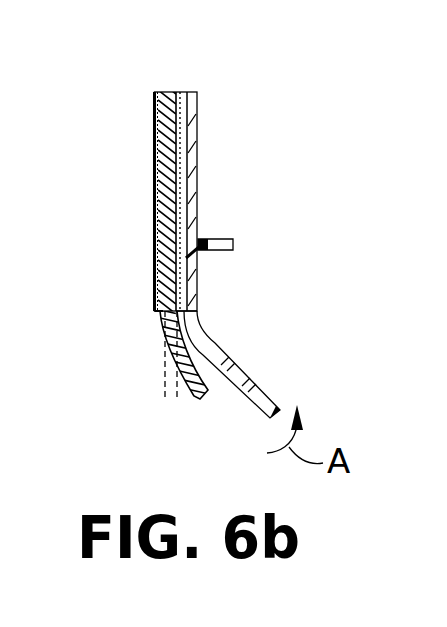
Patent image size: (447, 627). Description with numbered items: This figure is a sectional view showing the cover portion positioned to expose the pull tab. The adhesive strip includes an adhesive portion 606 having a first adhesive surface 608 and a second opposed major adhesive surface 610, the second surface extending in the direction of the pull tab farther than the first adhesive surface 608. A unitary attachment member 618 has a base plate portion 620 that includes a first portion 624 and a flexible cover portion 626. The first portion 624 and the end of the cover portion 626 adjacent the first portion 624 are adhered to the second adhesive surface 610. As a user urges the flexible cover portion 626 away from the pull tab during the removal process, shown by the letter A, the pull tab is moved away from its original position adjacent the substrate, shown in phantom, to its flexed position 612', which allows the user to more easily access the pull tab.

The adhesive portion 606 is at (161, 252).
The first adhesive surface 608 is at (156, 182).
The second opposed major adhesive surface 610 is at (180, 92).
The flexed position of pull tab 612' is at (146, 369).
The unitary attachment member 618 is at (224, 155).
The base plate portion 620 is at (192, 200).
The first portion 624 is at (188, 123).
The flexible cover portion 626 is at (207, 340).